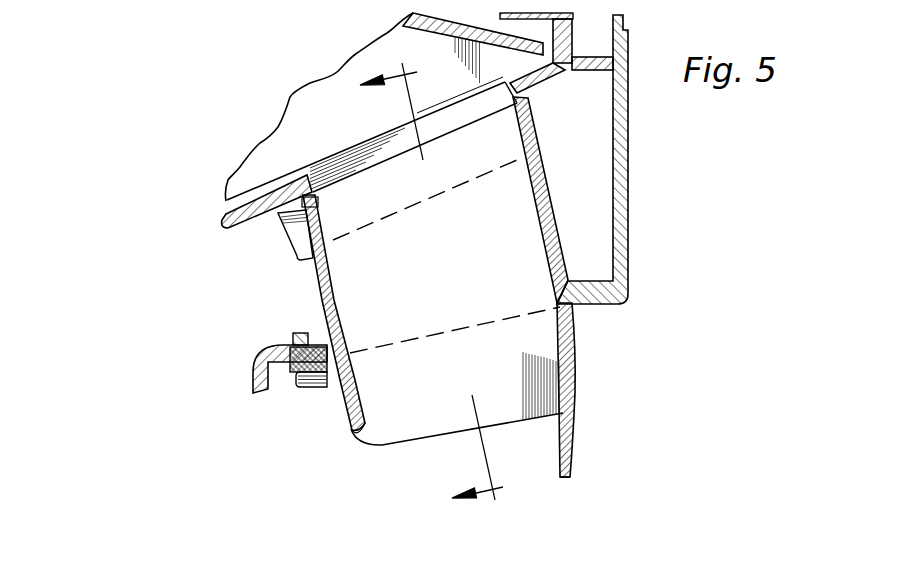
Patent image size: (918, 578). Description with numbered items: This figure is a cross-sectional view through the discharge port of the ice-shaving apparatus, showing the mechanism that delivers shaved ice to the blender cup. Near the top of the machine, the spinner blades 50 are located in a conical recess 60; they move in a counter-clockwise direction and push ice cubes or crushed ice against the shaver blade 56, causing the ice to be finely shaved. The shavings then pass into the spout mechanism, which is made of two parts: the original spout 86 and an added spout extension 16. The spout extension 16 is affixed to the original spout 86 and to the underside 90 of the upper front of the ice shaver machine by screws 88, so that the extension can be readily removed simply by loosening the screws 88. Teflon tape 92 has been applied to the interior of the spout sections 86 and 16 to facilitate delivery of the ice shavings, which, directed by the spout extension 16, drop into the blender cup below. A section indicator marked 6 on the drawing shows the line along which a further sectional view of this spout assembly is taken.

The side wall 16 is at (575, 378).
The panel 50 is at (332, 139).
The channel rail 56 is at (493, 95).
The trim strip 60 is at (252, 218).
The inner wall 86 is at (320, 276).
The fastener bolt 88 is at (312, 386).
The mounting bracket 90 is at (290, 346).
The rounded bottom edge 92 is at (367, 410).
The section line 6- 6 is at (418, 291).